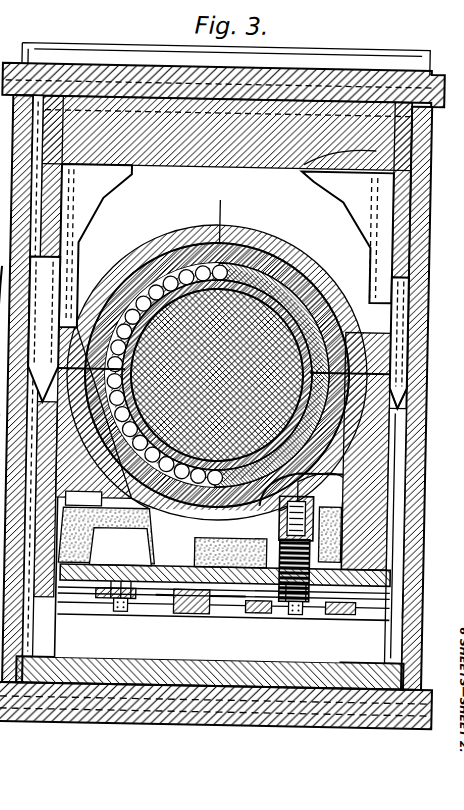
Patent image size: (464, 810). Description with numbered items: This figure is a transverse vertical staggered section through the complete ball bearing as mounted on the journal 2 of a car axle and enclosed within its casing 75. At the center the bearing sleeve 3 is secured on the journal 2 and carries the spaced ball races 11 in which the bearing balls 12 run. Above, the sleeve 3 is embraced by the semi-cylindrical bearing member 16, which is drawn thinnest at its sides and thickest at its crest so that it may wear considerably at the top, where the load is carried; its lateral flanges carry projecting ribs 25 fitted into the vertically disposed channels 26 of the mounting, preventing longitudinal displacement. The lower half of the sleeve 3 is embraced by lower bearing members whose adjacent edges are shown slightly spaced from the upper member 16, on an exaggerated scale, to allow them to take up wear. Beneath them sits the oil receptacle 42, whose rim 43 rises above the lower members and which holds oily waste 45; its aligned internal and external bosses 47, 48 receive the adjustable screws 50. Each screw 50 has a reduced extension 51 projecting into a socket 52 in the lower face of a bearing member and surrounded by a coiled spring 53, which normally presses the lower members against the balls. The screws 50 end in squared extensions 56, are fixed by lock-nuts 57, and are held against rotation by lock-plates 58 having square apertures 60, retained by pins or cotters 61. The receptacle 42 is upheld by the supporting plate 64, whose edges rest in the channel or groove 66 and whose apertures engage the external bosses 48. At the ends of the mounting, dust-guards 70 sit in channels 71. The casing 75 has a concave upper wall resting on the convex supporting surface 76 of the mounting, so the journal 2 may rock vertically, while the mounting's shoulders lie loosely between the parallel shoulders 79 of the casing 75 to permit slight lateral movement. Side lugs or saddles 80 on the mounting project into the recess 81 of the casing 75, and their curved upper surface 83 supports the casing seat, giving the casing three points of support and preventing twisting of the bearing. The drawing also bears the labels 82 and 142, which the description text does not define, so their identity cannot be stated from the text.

The journal 2 is at (352, 338).
The bearing sleeve 3 is at (222, 241).
The ball races 11 is at (335, 420).
The bearing balls 12 is at (155, 598).
The semi-cylindrical bearing member 16 is at (290, 248).
The projecting ribs 25 is at (395, 362).
The vertically disposed channels 26 is at (360, 512).
The oil receptacle 42 is at (205, 616).
The rim 43 is at (445, 542).
The oily waste 45 is at (130, 613).
The internal bosses 47 is at (285, 565).
The external bosses 48 is at (255, 612).
The adjustable screws 50 is at (100, 605).
The reduced extension 51 is at (300, 498).
The socket 52 is at (320, 478).
The coiled spring 53 is at (350, 567).
The squared extension 56 is at (305, 615).
The lock-nuts 57 is at (372, 628).
The lock-plates 58 is at (118, 612).
The square apertures 60 is at (191, 601).
The pins or cotters 61 is at (340, 612).
The supporting plate 64 is at (395, 602).
The channel or groove 66 is at (345, 590).
The dust-guards 70 is at (416, 186).
The channels 71 is at (417, 602).
The casing 75 is at (372, 148).
The convex supporting surface 76 is at (300, 163).
The parallel shoulders 79 is at (140, 164).
The side lugs or saddles 80 is at (440, 310).
The recess 81 is at (335, 268).
The gib 82 is at (43, 329).
The curved upper surface 83 is at (325, 287).
The cover plate 142 is at (360, 80).